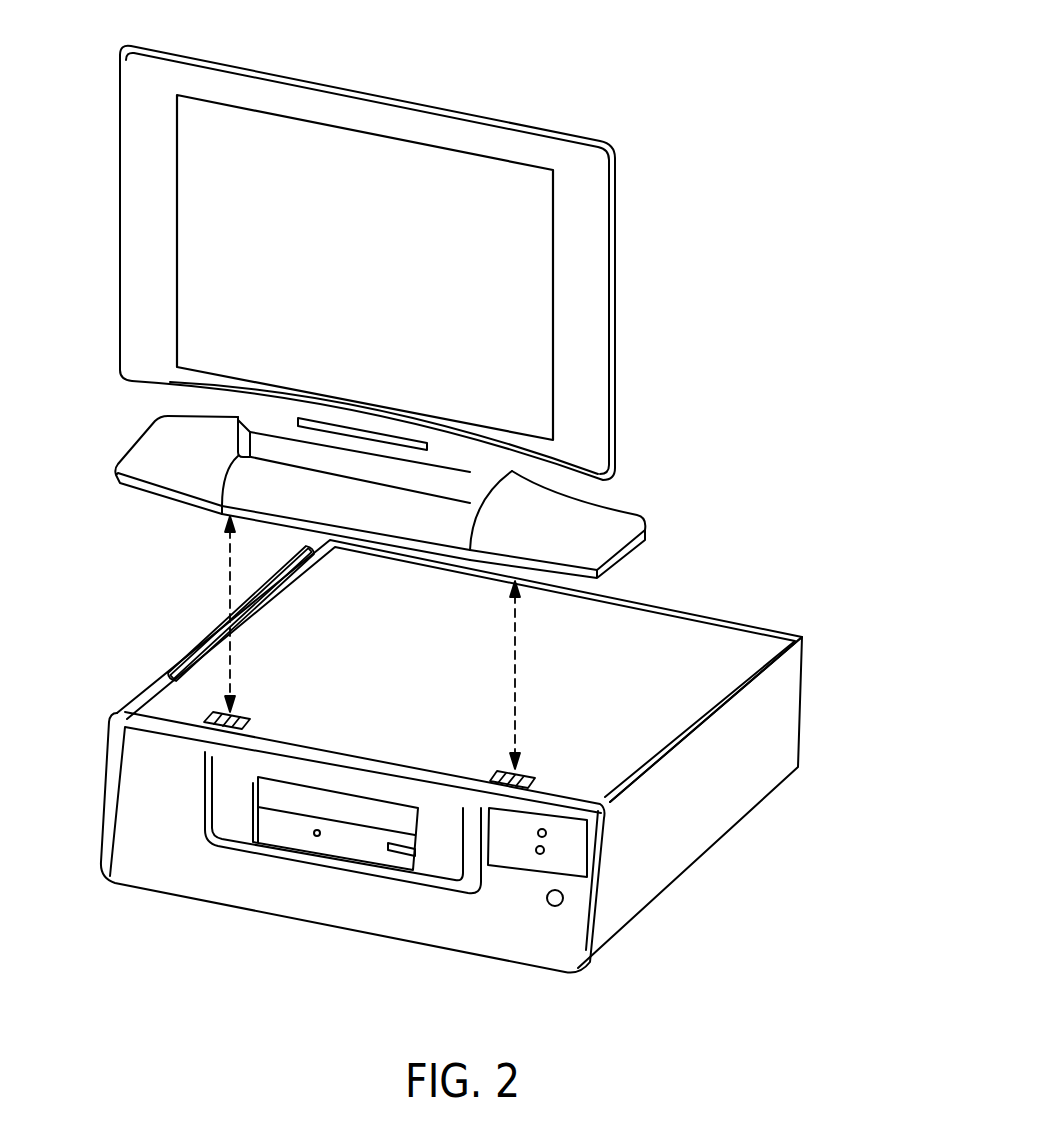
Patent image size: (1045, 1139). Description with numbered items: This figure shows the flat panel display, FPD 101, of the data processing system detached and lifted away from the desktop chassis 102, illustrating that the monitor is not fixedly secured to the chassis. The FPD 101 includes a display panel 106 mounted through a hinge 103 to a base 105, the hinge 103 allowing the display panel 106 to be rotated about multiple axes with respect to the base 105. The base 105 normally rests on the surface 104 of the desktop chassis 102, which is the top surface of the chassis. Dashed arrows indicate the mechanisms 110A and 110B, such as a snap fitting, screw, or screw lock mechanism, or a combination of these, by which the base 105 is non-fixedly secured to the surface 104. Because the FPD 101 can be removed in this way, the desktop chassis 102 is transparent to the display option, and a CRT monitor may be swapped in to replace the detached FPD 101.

The FPD 101 is at (686, 283).
The desktop chassis 102 is at (832, 695).
The hinge 103 is at (522, 497).
The surface 104 is at (270, 680).
The base 105 is at (160, 452).
The display panel 106 is at (376, 130).
The mechanism 110A is at (228, 573).
The mechanism 110B is at (515, 643).